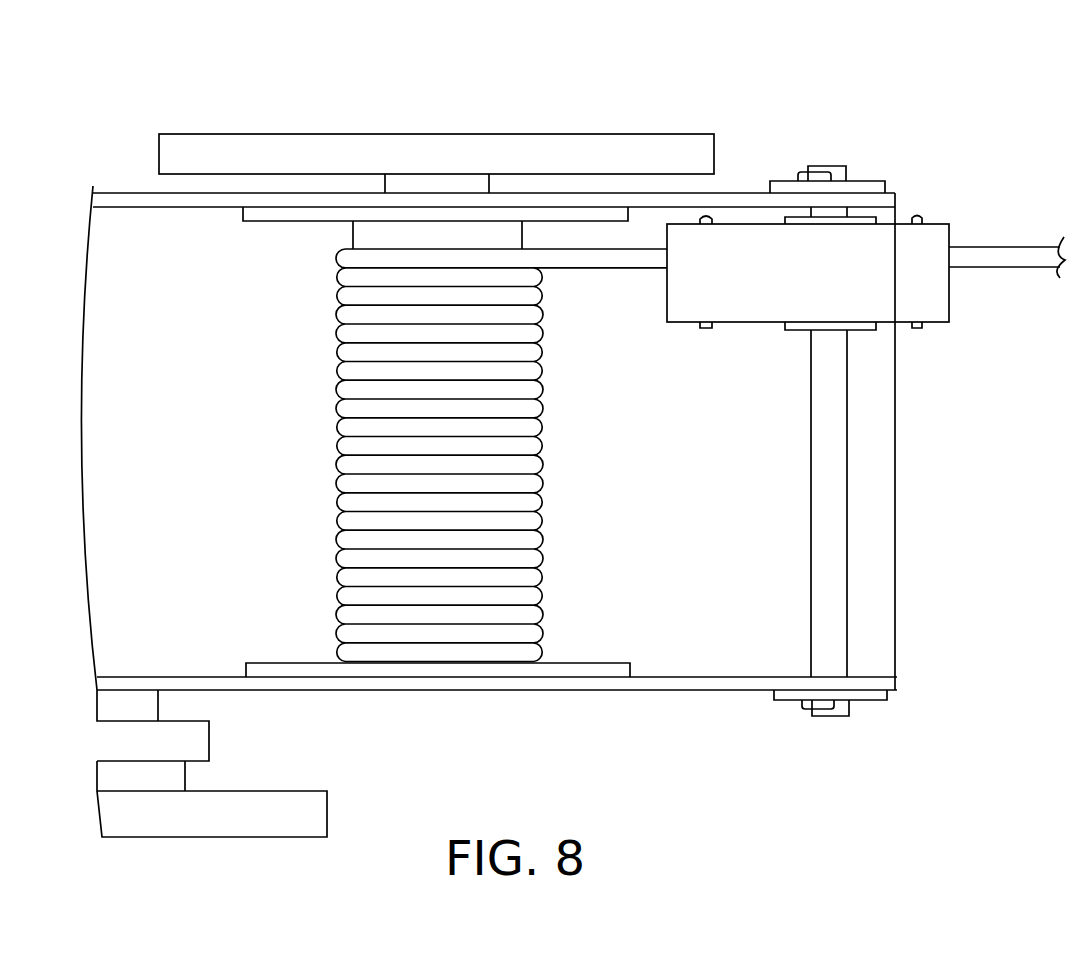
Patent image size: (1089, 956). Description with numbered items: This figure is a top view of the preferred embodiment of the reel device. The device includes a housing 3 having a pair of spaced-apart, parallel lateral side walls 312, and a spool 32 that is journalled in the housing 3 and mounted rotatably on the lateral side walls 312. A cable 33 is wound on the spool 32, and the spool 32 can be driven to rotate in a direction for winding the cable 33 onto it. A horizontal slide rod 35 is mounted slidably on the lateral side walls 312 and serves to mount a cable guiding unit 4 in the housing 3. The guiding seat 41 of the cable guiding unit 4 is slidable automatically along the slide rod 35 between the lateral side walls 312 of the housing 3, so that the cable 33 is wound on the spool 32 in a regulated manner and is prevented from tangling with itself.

The housing 3 is at (489, 419).
The lateral side walls 312 is at (647, 205).
The spool 32 is at (447, 237).
The cable 33 is at (584, 253).
The horizontal slide rod 35 is at (835, 482).
The cable guiding unit 4 is at (729, 196).
The guiding seat 41 is at (928, 244).